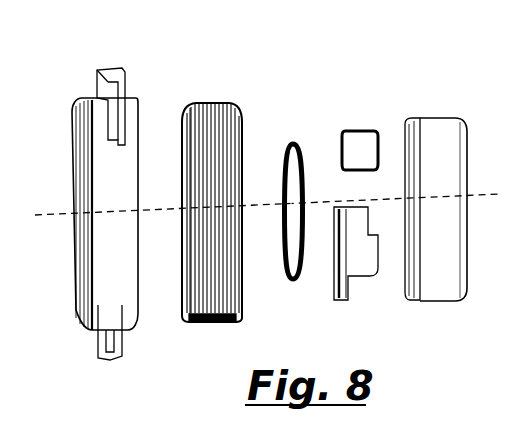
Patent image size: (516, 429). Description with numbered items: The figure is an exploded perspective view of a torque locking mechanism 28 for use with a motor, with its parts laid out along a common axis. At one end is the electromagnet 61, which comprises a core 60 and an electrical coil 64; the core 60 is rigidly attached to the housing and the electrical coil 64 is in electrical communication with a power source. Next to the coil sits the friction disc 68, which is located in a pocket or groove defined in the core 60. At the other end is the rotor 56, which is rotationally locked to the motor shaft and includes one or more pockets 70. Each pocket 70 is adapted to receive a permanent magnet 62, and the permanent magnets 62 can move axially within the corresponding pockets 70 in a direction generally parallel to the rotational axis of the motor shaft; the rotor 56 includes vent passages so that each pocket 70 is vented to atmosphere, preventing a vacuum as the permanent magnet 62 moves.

The torque locking mechanism 28 is at (299, 60).
The rotor 56 is at (438, 133).
The core 60 is at (110, 360).
The electromagnet 61 is at (161, 97).
The permanent magnet 62 is at (358, 156).
The electrical coil 64 is at (212, 322).
The friction disc 68 is at (295, 282).
The pocket 70 is at (409, 148).